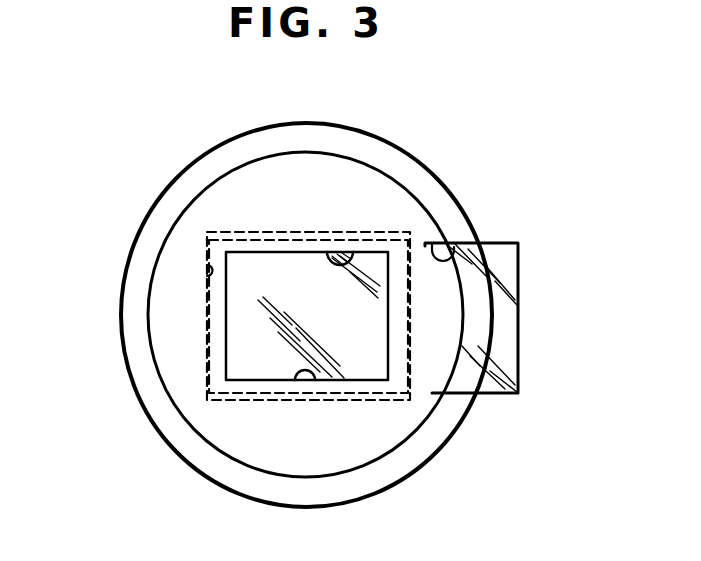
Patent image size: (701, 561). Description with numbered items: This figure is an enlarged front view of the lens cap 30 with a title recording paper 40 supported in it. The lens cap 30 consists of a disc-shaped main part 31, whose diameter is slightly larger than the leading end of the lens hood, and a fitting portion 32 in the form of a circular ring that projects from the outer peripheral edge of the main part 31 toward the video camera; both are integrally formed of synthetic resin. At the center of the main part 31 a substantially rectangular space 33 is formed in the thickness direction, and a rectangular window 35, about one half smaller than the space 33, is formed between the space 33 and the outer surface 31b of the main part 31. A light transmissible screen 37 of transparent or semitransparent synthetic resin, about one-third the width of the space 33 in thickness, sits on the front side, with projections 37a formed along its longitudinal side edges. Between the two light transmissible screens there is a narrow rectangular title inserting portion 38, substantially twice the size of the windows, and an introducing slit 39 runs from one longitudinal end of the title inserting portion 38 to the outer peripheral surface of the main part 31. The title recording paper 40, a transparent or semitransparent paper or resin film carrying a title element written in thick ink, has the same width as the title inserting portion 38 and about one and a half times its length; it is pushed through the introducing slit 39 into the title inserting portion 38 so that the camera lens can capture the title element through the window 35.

The lens cap 30 is at (196, 139).
The main part 31 is at (130, 320).
The outer surface 31b is at (173, 358).
The fitting portion 32 is at (156, 430).
The space 33 is at (207, 265).
The window 35 is at (313, 381).
The light transmissible screen 37 is at (405, 366).
The projection 37a is at (398, 233).
The title inserting portion 38 is at (354, 246).
The introducing slit 39 is at (462, 243).
The title recording paper 40 is at (510, 328).